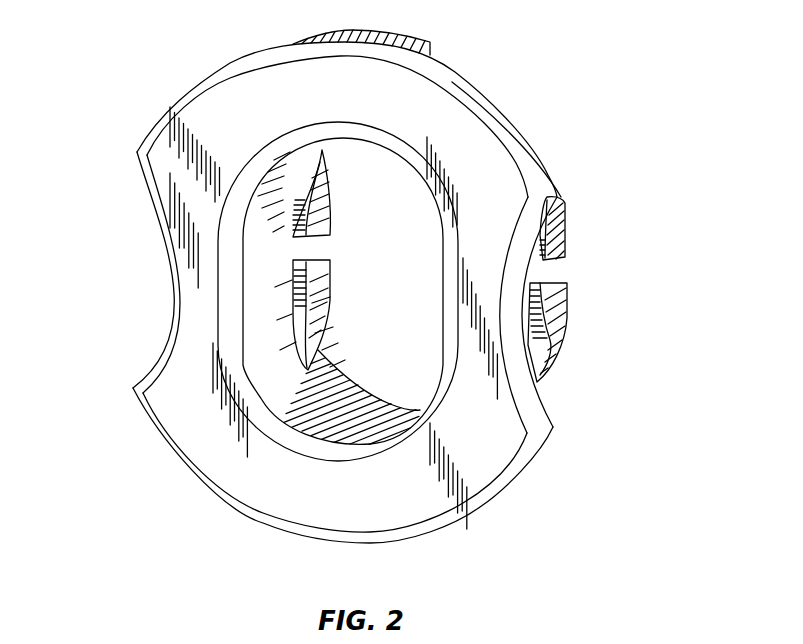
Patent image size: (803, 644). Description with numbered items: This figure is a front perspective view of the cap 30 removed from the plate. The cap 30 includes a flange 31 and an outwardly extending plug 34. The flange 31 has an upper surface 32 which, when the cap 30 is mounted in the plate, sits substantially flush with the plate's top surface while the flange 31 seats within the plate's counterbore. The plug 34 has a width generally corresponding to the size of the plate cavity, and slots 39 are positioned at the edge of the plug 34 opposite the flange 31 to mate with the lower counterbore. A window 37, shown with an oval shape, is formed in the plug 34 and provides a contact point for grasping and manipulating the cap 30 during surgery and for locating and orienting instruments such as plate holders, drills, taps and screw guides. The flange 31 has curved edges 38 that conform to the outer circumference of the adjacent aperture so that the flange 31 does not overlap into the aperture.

The cap 30 is at (540, 88).
The flange 31 is at (250, 102).
The upper surface 32 is at (205, 438).
The plug 34 is at (556, 218).
The window 37 is at (367, 214).
The curved edges 38 is at (163, 249).
The slots 39 is at (557, 271).